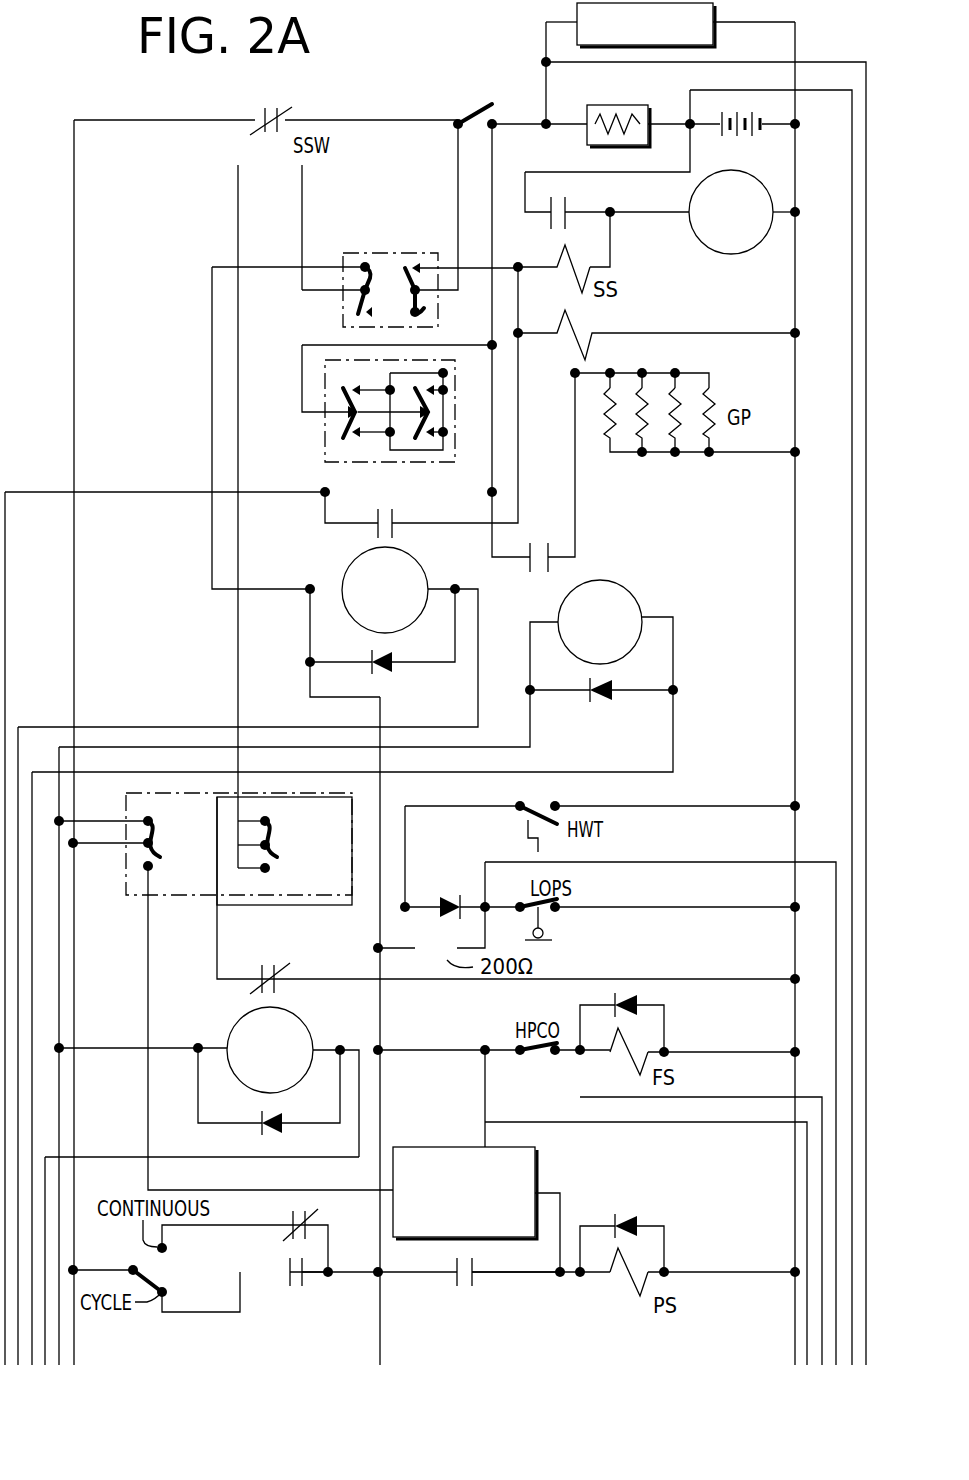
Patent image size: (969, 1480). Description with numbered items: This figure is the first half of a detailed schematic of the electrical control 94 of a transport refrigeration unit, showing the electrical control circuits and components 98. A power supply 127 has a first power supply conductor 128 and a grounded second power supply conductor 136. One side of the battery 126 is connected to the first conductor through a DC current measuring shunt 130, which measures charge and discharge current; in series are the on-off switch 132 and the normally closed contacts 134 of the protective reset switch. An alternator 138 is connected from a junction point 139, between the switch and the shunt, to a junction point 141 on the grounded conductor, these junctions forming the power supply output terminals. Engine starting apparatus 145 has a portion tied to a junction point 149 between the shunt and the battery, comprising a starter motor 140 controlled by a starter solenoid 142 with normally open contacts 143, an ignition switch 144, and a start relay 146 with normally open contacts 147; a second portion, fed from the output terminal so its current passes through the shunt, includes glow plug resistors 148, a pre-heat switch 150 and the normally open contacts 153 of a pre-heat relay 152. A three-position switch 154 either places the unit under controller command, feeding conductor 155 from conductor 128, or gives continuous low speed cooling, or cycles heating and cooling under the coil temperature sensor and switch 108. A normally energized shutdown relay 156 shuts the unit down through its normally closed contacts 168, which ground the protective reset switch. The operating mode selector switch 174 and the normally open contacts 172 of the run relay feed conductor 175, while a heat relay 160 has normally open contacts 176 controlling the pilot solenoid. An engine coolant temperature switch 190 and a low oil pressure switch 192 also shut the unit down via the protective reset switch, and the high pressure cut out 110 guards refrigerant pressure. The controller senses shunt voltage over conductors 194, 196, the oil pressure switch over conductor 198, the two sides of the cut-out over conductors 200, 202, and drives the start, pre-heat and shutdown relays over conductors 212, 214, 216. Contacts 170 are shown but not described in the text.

The electrical control 94 is at (488, 48).
The electrical control circuits and components 98 is at (359, 110).
The coil temperature sensor and switch 108 is at (537, 1168).
The high pressure cut out (HPCO) 110 is at (547, 1057).
The battery 126 is at (744, 140).
The power supply 127 is at (767, 58).
The first power supply conductor 128 is at (73, 142).
The DC current measuring shunt 130 is at (628, 107).
The on-off switch 132 is at (483, 103).
The normally closed contacts 134 is at (270, 103).
The second power supply conductor 136 is at (797, 200).
The alternator 138 is at (577, 10).
The junction point 139 is at (545, 123).
The starter motor 140 is at (735, 258).
The junction point 141 is at (798, 127).
The starter solenoid 142 is at (557, 319).
The normally open contacts 143 is at (565, 200).
The ignition switch 144 is at (388, 253).
The engine starting apparatus 145 is at (678, 253).
The start relay 146 is at (472, 583).
The normally open contacts 147 is at (373, 532).
The glow plug resistors (GP) 148 is at (715, 395).
The junction point 149 is at (690, 124).
The pre-heat switch 150 is at (327, 460).
The pre-heat relay 152 is at (697, 606).
The normally open contacts 153 is at (540, 543).
The three-position switch 154 is at (182, 895).
The conductor 155 is at (58, 1020).
The shutdown relay 156 is at (350, 1040).
The heat relay 160 is at (533, 1314).
The normally closed contacts 168 is at (272, 960).
The continuous run contacts 170 is at (295, 1220).
The normally open contacts 172 is at (295, 1287).
The operating mode selector switch 174 is at (125, 1259).
The conductor 175 is at (380, 1077).
The normally open contacts 176 is at (463, 1287).
The engine coolant temperature switch (HWT) 190 is at (527, 818).
The low oil pressure switch (LOPS) 192 is at (547, 913).
The conductor 194 is at (813, 62).
The conductor 196 is at (825, 95).
The conductor 198 is at (708, 862).
The conductor 200 is at (710, 1097).
The conductor 202 is at (720, 1123).
The conductor 212 is at (18, 1350).
The conductor 214 is at (32, 1330).
The conductor 216 is at (85, 1155).